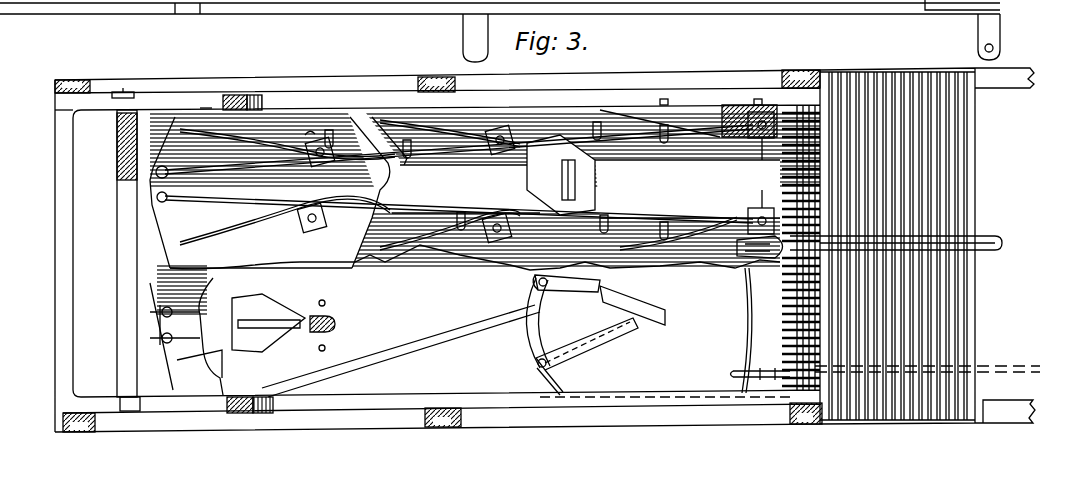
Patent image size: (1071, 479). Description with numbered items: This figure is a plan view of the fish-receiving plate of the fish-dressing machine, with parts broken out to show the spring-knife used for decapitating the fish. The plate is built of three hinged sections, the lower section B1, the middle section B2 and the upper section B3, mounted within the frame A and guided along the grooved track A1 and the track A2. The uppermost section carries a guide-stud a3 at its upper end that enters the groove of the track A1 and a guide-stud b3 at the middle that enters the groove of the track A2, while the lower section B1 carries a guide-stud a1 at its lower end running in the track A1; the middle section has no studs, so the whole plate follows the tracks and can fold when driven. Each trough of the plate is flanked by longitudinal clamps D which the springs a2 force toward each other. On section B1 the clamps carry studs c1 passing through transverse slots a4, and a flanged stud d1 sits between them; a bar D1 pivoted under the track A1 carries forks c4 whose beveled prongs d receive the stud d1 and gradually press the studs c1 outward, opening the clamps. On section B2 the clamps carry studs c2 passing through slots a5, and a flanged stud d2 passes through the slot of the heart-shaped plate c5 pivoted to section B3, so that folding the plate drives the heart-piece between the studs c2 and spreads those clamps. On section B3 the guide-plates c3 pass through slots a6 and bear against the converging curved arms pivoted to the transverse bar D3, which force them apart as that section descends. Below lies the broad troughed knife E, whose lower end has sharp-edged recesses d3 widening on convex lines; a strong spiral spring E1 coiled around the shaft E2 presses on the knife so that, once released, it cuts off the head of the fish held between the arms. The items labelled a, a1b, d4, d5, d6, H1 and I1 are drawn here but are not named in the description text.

The frame A is at (545, 250).
The track A1 is at (170, 92).
The track A2 is at (233, 92).
The slots a is at (496, 181).
The guide-stud a1 is at (450, 230).
The rail lug a1b is at (206, 108).
The springs a2 is at (285, 220).
The guide-stud a3 is at (450, 133).
The transverse slots a4 is at (516, 273).
The transverse slots a5 is at (580, 258).
The transverse slots a6 is at (692, 214).
The lower section B1 is at (278, 190).
The middle section B2 is at (476, 189).
The upper section B3 is at (687, 189).
The guide-stud b3 is at (758, 99).
The studs c1 is at (315, 192).
The studs c2 is at (502, 184).
The studs or short guide-plates c3 is at (747, 175).
The forks c4 is at (173, 322).
The heart-shaped plate c5 is at (424, 166).
The prongs d is at (266, 323).
The flanged stud d1 is at (340, 324).
The flanged stud d2 is at (561, 175).
The sharp-edged recesses d3 is at (287, 142).
The long rods d4 is at (459, 174).
The link d5 is at (566, 285).
The lever d6 is at (587, 356).
The longitudinal clamps D is at (499, 159).
The bar D1 is at (97, 249).
The transverse bar D3 is at (534, 323).
The knife E is at (680, 251).
The spiral spring E1 is at (760, 274).
The shaft E2 is at (761, 357).
The slat drum and shaft H1 is at (904, 246).
The dashed shaft line I1 is at (930, 383).